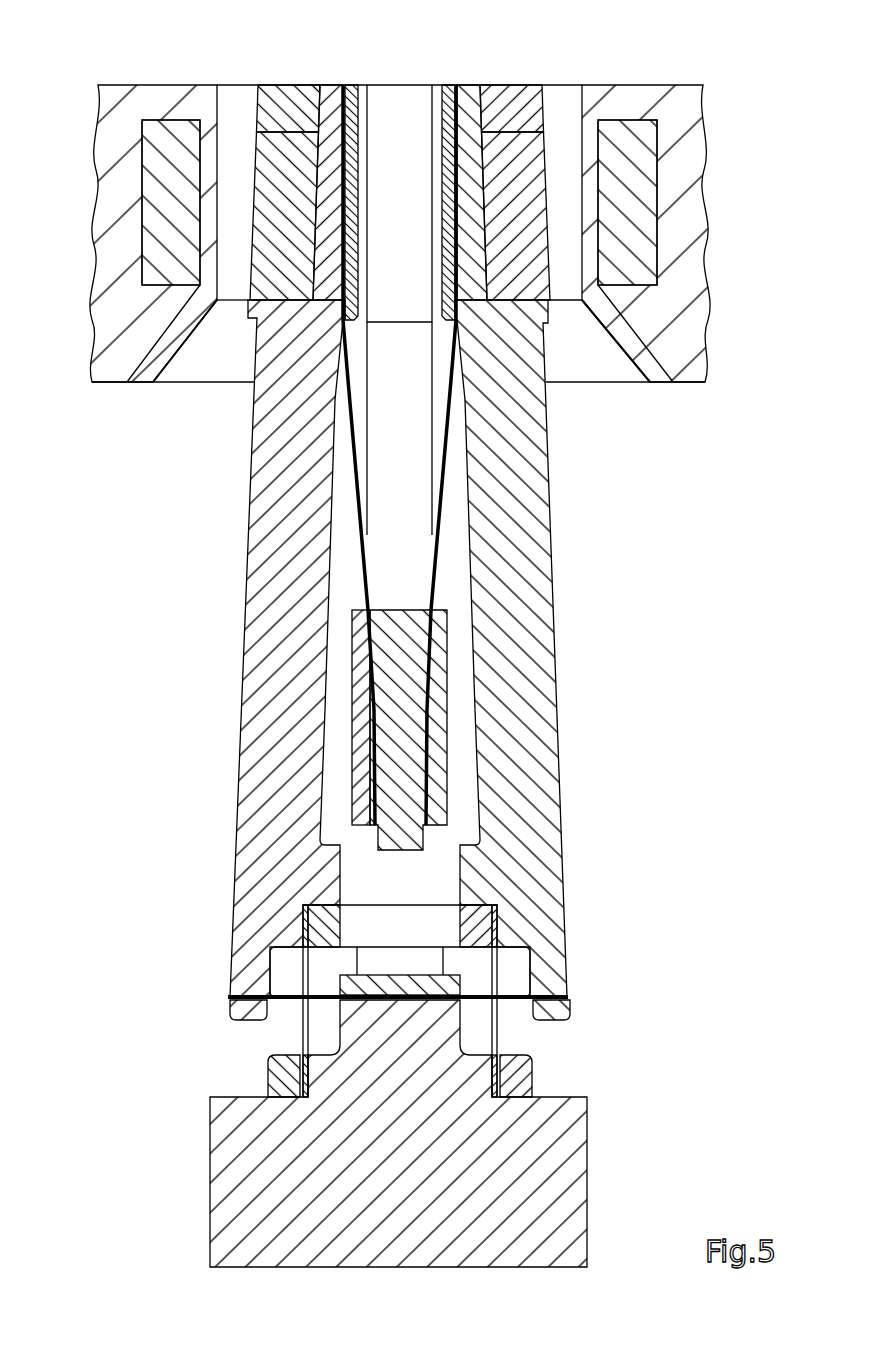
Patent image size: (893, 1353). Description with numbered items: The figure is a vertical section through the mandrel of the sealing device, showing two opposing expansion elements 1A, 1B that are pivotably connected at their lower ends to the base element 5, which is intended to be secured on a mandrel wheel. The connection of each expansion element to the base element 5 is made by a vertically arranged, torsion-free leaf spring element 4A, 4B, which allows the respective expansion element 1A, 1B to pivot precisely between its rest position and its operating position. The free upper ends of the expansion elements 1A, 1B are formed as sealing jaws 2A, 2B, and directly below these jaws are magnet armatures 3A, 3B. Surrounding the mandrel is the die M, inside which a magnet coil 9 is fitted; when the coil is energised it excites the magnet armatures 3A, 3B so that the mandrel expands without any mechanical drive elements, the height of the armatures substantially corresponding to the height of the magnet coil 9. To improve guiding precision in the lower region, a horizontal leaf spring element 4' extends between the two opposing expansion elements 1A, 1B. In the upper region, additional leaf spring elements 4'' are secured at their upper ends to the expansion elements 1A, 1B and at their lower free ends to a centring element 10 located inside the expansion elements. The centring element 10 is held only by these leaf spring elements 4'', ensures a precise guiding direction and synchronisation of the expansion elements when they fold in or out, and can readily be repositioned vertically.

The die M is at (118, 147).
The magnet coil 9 is at (160, 251).
The sealing jaw 2A is at (289, 100).
The magnet armature 3A is at (262, 170).
The sealing jaw 2B is at (511, 100).
The magnet armature 3B is at (540, 168).
The additional leaf spring element 4'' is at (399, 455).
The leaf spring element 4' is at (369, 1037).
The expansion element 1A is at (262, 725).
The expansion element 1B is at (540, 724).
The centring element 10 is at (408, 690).
The leaf spring element 4A is at (303, 978).
The leaf spring element 4B is at (497, 978).
The base element 5 is at (258, 1182).